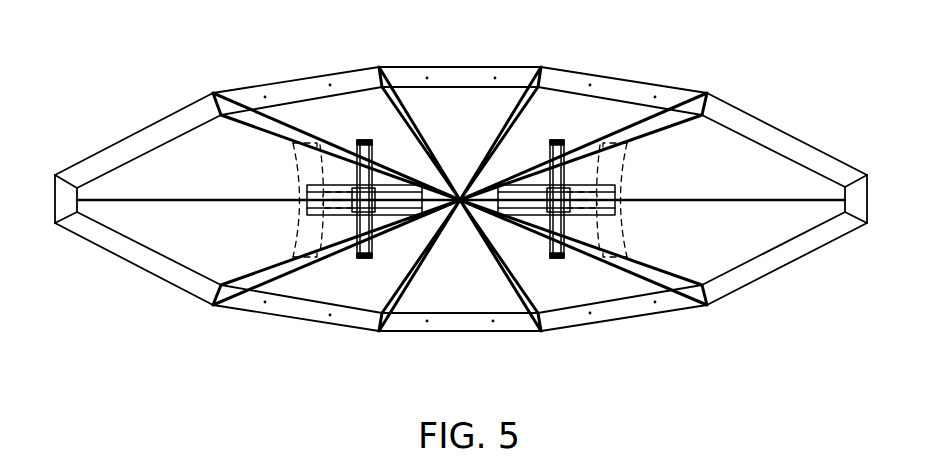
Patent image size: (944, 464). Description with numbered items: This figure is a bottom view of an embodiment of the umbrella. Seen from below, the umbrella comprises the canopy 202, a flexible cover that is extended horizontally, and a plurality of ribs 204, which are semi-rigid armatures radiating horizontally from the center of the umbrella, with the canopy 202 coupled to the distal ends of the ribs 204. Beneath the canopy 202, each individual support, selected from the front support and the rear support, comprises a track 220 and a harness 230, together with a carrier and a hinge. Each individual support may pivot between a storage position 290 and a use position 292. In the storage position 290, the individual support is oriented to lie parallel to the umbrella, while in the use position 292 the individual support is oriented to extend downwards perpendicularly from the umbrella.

The canopy 202 is at (177, 245).
The ribs 204 is at (220, 118).
The track 220 is at (403, 110).
The harness 230 is at (557, 138).
The storage position 290 is at (620, 240).
The use position 292 is at (567, 258).